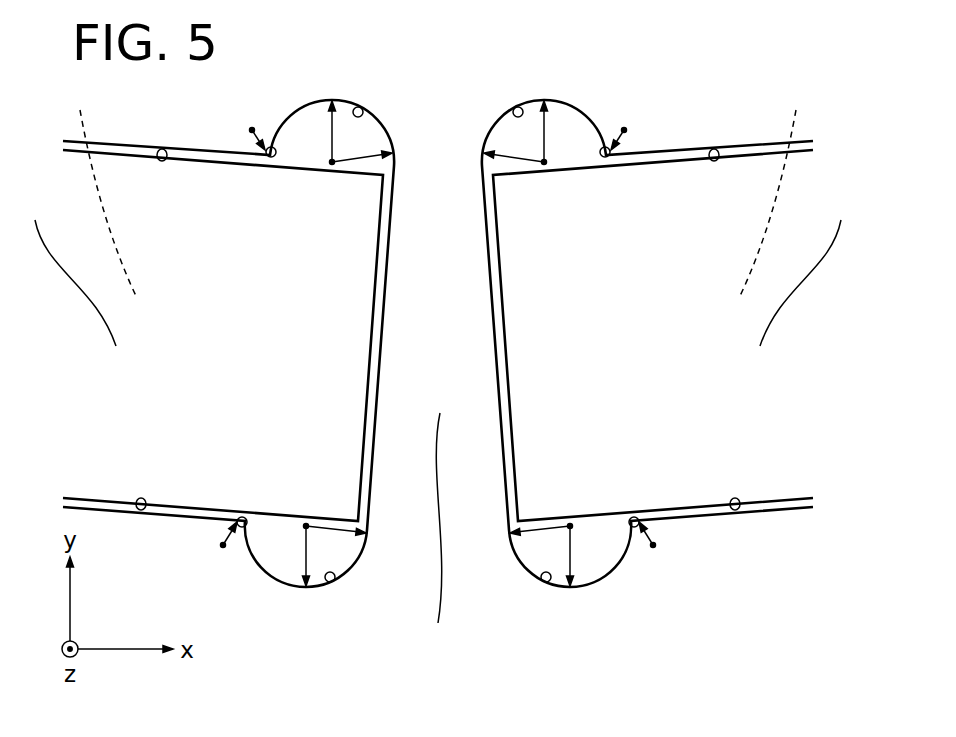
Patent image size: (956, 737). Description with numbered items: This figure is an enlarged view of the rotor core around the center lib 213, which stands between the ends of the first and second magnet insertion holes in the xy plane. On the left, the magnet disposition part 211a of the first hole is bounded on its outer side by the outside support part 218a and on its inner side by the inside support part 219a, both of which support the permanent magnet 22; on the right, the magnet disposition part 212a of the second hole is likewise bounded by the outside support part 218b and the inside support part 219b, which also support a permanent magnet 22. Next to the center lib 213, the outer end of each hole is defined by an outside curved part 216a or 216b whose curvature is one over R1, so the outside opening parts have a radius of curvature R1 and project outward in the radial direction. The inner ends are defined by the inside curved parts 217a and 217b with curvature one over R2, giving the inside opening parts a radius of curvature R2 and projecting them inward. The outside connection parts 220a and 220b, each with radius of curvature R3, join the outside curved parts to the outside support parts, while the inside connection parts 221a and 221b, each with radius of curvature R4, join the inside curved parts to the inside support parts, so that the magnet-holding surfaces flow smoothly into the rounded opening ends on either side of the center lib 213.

The permanent magnet 22 is at (438, 270).
The magnet disposition part 211a is at (94, 191).
The magnet disposition part 212a is at (783, 191).
The center lib 213 is at (437, 535).
The outside curved part 216a is at (361, 108).
The outside curved part 216b is at (515, 108).
The inside curved part 217a is at (332, 582).
The inside curved part 217b is at (544, 582).
The outside support part 218a is at (160, 149).
The outside support part 218b is at (716, 149).
The inside support part 219a is at (140, 510).
The inside support part 219b is at (736, 510).
The outside connection part 220a is at (269, 148).
The outside connection part 220b is at (607, 148).
The inside connection part 221a is at (240, 527).
The inside connection part 221b is at (636, 527).
The radius of curvature of outside opening part R1 is at (438, 133).
The radius of curvature of inside opening part R2 is at (438, 555).
The radius of curvature of outside connection part R3 is at (438, 139).
The radius of curvature of inside connection part R4 is at (438, 535).